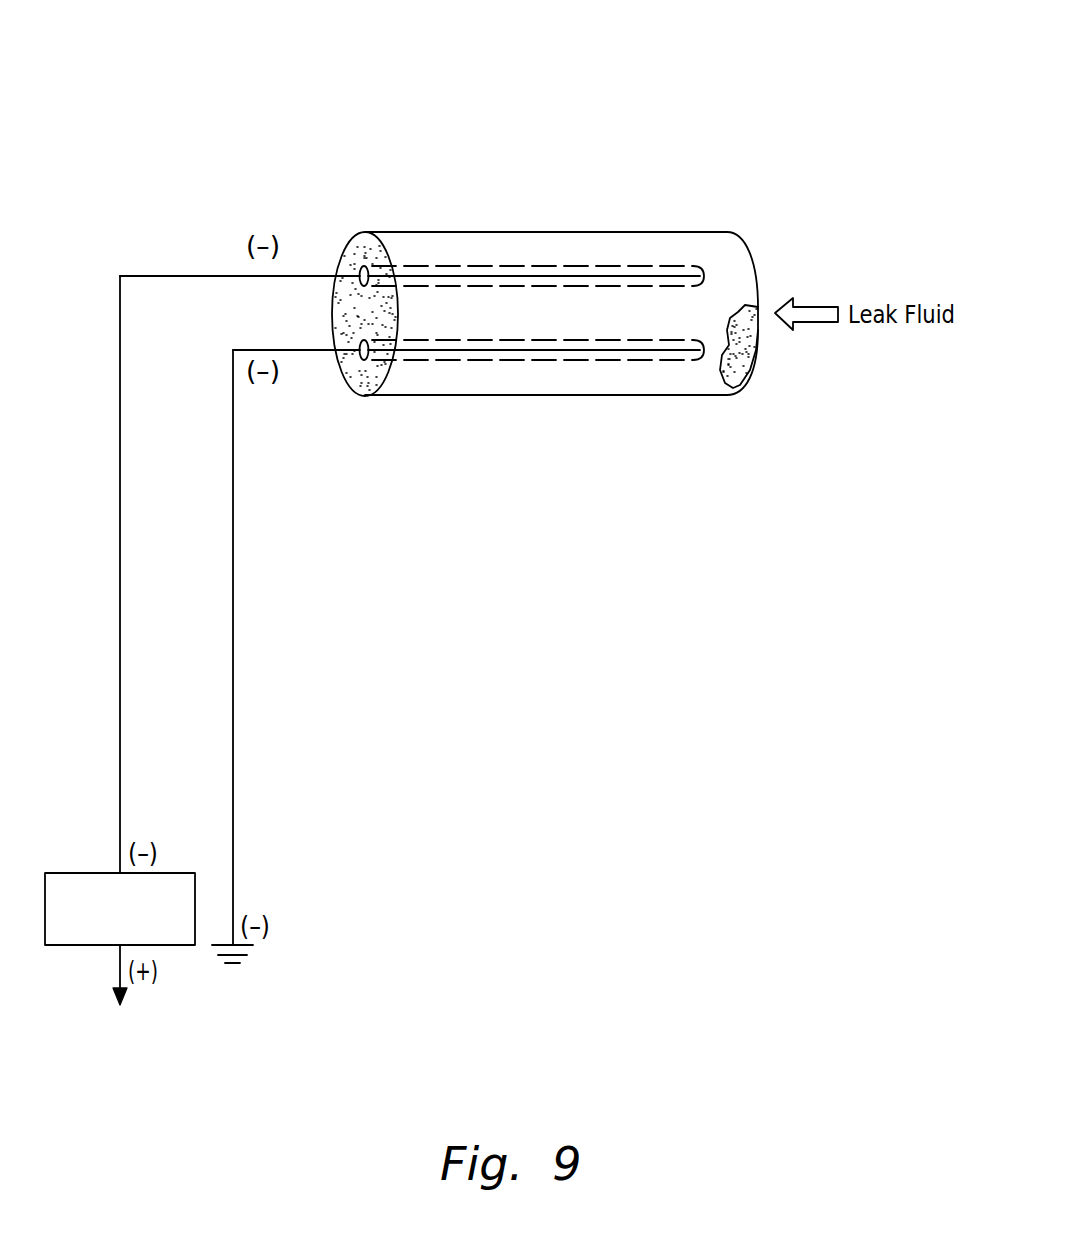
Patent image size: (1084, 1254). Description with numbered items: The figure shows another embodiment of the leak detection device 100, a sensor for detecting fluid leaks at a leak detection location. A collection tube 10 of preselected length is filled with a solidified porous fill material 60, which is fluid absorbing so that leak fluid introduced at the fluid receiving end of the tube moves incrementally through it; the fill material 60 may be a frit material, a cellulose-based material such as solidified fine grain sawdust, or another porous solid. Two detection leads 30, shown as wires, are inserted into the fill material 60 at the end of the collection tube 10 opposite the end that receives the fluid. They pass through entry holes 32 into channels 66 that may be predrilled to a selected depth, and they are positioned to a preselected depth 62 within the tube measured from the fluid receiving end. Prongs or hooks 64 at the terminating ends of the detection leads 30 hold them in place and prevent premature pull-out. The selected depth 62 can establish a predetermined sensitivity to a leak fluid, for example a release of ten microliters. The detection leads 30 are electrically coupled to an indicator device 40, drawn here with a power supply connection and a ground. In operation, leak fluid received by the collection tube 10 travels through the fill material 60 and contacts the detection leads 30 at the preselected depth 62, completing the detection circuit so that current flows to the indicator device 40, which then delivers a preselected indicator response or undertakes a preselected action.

The leak detection device 100 is at (302, 104).
The collection tube 10 is at (700, 326).
The detection leads 30 is at (600, 276).
The entry holes 32 is at (360, 272).
The indicator device 40 is at (140, 923).
The porous fill material 60 is at (350, 325).
The preselected depth 62 is at (727, 224).
The prongs or hooks 64 is at (694, 270).
The channels 66 is at (508, 265).